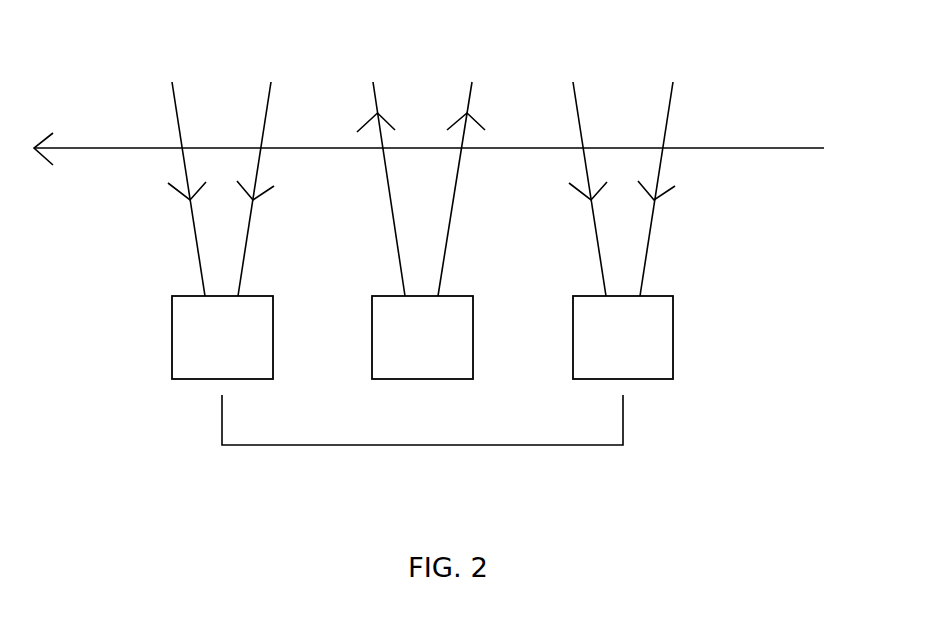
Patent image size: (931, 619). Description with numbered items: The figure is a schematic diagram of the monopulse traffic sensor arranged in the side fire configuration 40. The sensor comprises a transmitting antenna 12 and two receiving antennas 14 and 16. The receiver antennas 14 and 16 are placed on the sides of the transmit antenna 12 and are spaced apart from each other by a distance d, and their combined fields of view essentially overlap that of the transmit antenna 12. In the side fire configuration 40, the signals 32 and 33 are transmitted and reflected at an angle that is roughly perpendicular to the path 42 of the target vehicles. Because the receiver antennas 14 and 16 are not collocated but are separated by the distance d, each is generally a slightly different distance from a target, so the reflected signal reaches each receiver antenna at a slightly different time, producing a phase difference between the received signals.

The transmitting antenna 12 is at (472, 296).
The receiving antenna 14 is at (272, 296).
The receiving antenna 16 is at (673, 296).
The signal 32 is at (455, 98).
The signal 33 is at (188, 98).
The side fire configuration 40 is at (112, 401).
The path of the target vehicles 42 is at (757, 148).